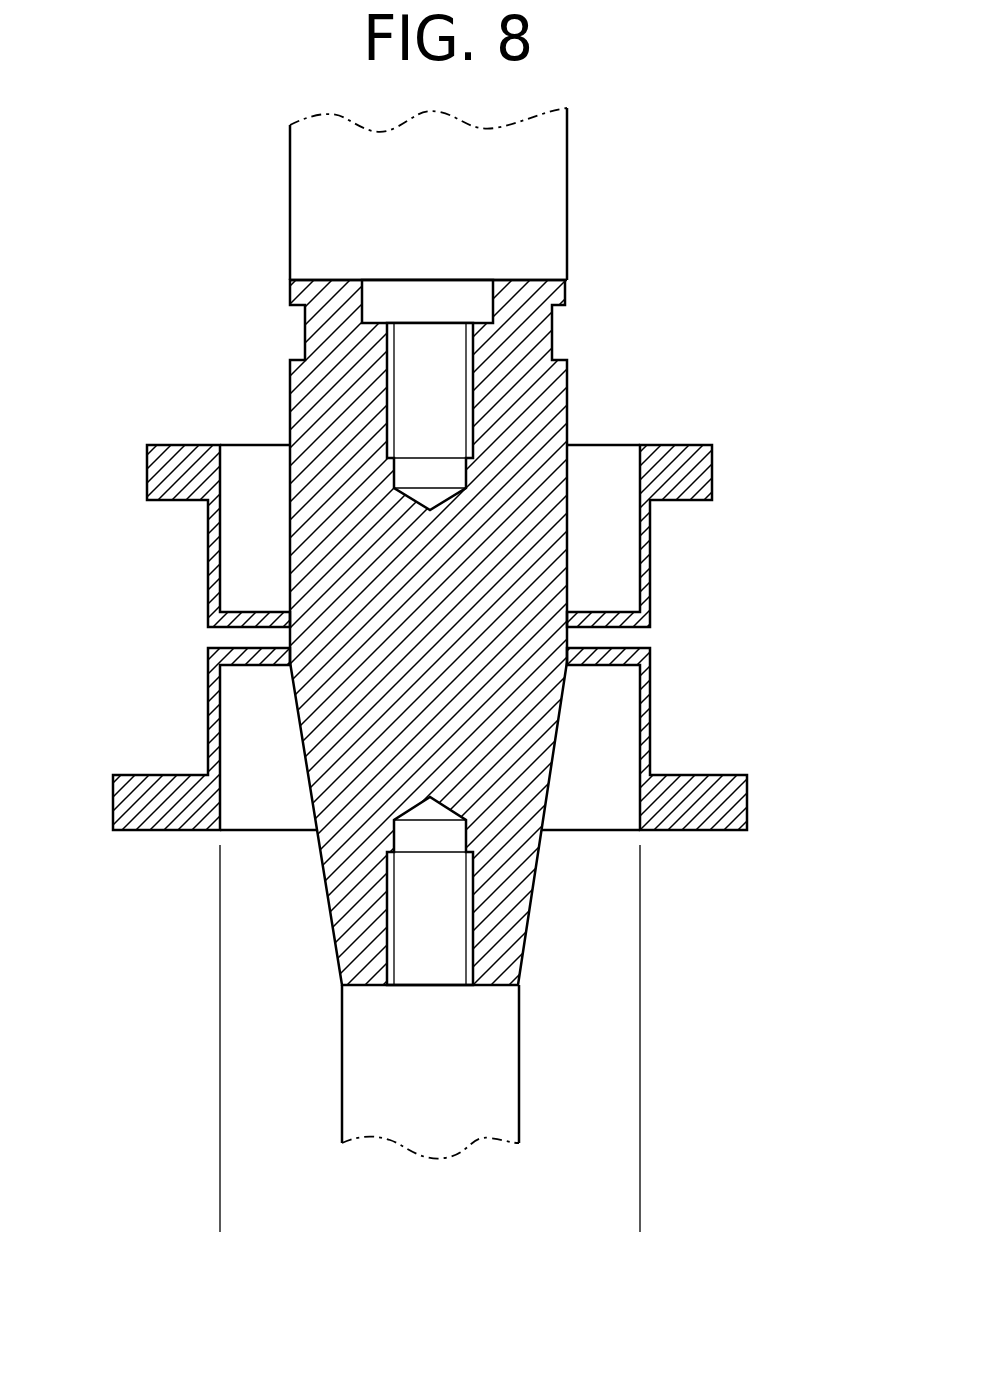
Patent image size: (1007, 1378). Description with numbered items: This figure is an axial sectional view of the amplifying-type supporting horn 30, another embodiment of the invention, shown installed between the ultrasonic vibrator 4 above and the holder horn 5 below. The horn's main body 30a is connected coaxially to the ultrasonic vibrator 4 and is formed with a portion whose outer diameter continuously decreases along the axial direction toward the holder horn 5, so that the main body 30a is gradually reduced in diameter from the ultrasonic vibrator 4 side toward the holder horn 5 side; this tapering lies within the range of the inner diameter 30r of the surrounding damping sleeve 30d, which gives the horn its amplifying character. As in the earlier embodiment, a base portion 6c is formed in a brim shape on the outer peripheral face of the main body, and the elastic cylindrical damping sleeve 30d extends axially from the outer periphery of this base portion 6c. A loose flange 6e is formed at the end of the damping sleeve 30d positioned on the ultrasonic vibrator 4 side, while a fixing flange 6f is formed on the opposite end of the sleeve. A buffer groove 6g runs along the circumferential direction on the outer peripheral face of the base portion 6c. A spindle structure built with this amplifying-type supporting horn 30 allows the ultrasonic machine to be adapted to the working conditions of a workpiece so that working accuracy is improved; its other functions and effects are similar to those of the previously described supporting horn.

The ultrasonic vibrator 4 is at (552, 158).
The holder horn 5 is at (519, 1105).
The supporting horn 30 is at (278, 263).
The main body 30a is at (552, 775).
The damping sleeve 30d is at (207, 560).
The inner diameter of damping sleeve 30r is at (640, 1218).
The base portion 6c is at (262, 612).
The loose flange 6e is at (712, 447).
The fixing flange 6f is at (705, 807).
The buffer groove 6g is at (242, 640).